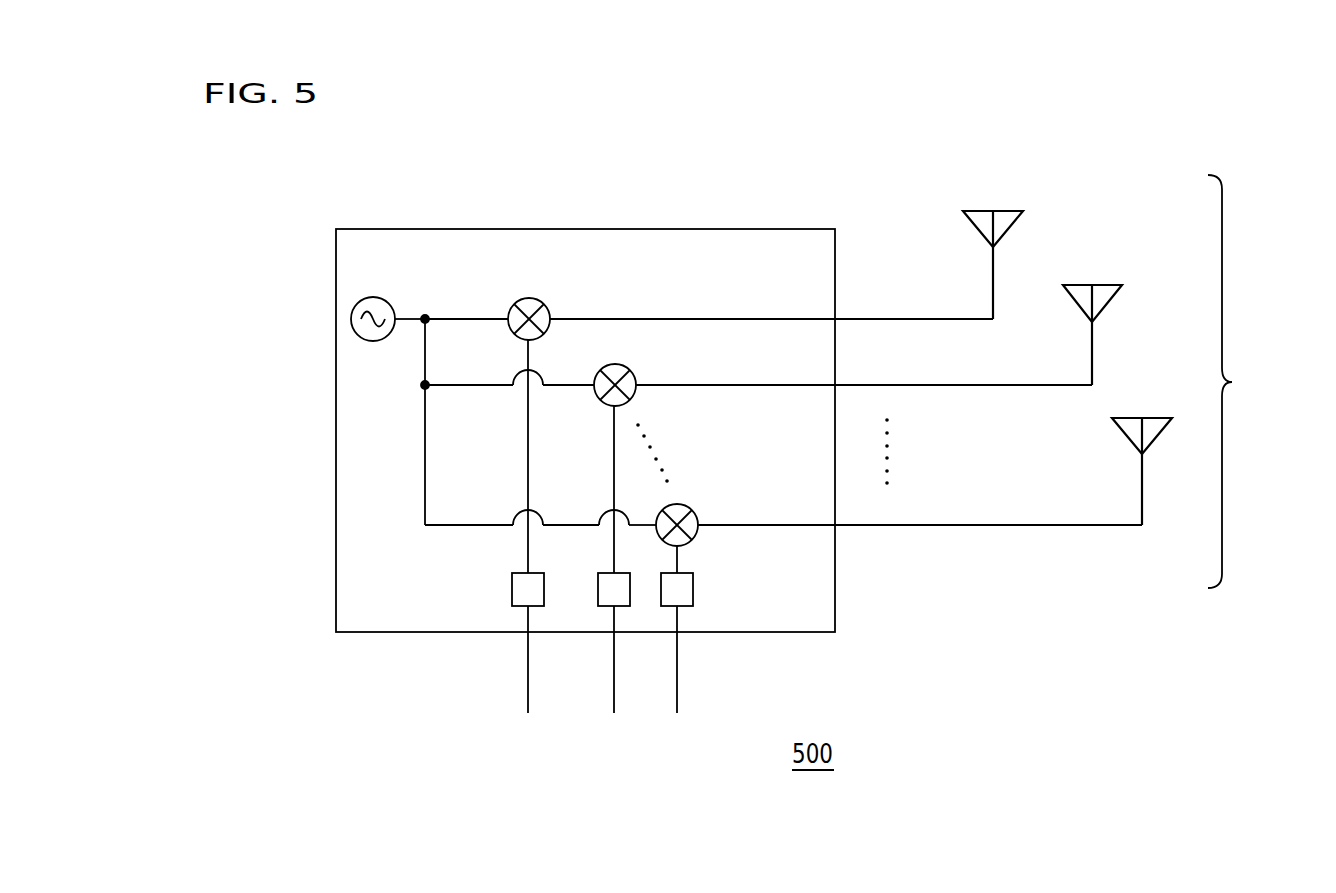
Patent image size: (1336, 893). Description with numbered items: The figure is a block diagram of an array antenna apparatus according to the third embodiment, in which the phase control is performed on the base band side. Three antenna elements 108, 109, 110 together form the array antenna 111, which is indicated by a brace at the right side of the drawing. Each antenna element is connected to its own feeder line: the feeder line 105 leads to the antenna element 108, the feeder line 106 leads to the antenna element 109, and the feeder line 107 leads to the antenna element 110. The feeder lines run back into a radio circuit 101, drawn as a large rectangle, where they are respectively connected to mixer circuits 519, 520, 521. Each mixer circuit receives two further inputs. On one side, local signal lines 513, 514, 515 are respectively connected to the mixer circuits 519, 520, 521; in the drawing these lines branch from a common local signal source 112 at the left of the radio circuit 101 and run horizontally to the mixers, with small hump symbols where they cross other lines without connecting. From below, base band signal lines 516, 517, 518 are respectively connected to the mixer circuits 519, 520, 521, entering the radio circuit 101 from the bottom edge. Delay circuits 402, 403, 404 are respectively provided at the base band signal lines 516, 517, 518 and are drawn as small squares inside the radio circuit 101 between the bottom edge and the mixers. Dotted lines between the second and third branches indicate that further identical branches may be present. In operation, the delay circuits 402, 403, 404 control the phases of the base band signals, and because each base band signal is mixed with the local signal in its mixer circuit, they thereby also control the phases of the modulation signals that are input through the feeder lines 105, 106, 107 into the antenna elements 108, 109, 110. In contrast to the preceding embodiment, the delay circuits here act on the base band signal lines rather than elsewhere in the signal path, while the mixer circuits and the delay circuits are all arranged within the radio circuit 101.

The radio circuit 101 is at (641, 229).
The local oscillator (signal source) 112 is at (373, 297).
The local signal line 513 is at (453, 319).
The local signal line 514 is at (452, 385).
The local signal line 515 is at (453, 524).
The mixer circuit 519 is at (548, 307).
The mixer circuit 520 is at (634, 374).
The mixer circuit 521 is at (696, 513).
The delay circuit 402 is at (512, 590).
The delay circuit 403 is at (598, 583).
The third amplifier / filter block 404 is at (693, 590).
The base band signal line 516 is at (527, 674).
The base band signal line 517 is at (614, 688).
The base band signal line 518 is at (677, 673).
The feeder line 105 is at (903, 319).
The feeder line 106 is at (945, 386).
The feeder line 107 is at (920, 526).
The antenna element 108 is at (1003, 211).
The antenna element 109 is at (1103, 285).
The antenna element 110 is at (1152, 418).
The array antenna 111 is at (1245, 381).